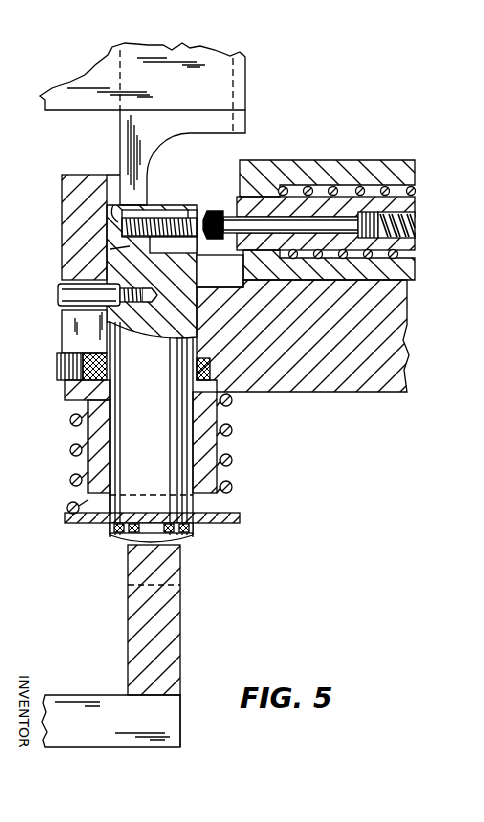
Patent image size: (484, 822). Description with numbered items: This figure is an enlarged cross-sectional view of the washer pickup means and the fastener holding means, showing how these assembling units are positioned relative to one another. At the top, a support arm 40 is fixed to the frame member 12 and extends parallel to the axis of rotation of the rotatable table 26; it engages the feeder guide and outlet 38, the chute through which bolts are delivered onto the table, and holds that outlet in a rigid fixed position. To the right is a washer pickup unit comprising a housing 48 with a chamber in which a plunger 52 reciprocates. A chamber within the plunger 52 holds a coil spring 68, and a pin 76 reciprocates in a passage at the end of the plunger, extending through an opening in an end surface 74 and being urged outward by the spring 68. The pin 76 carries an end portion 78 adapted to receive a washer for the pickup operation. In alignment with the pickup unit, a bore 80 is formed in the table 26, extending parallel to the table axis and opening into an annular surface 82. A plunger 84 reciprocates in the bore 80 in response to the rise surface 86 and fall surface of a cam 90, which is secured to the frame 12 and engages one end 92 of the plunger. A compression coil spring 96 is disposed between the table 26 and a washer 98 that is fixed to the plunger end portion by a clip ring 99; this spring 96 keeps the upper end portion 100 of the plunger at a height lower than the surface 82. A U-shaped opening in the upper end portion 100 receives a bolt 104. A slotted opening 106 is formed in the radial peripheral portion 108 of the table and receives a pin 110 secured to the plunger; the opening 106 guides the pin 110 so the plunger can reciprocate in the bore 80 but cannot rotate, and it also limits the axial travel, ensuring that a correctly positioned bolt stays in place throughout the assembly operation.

The frame member 12 is at (78, 697).
The rotatable table 26 is at (407, 342).
The feeder guide and outlet 38 is at (125, 147).
The support arm 40 is at (85, 73).
The housing 48 is at (360, 170).
The plunger 52 is at (412, 204).
The coil spring 68 is at (415, 232).
The end surface 74 is at (220, 271).
The pin 76 is at (298, 222).
The end portion 78 is at (213, 214).
The bore 80 is at (200, 448).
The annular surface 82 is at (113, 200).
The plunger 84 is at (170, 395).
The rise surface 86 is at (183, 542).
The cam 90 is at (181, 607).
The plunger end 92 is at (118, 540).
The compression coil spring 96 is at (70, 452).
The washer 98 is at (240, 519).
The clip ring 99 is at (195, 528).
The upper end portion 100 is at (110, 249).
The bolt 104 is at (182, 213).
The slotted opening 106 is at (66, 330).
The radial peripheral portion 108 is at (68, 204).
The pin 110 is at (60, 293).